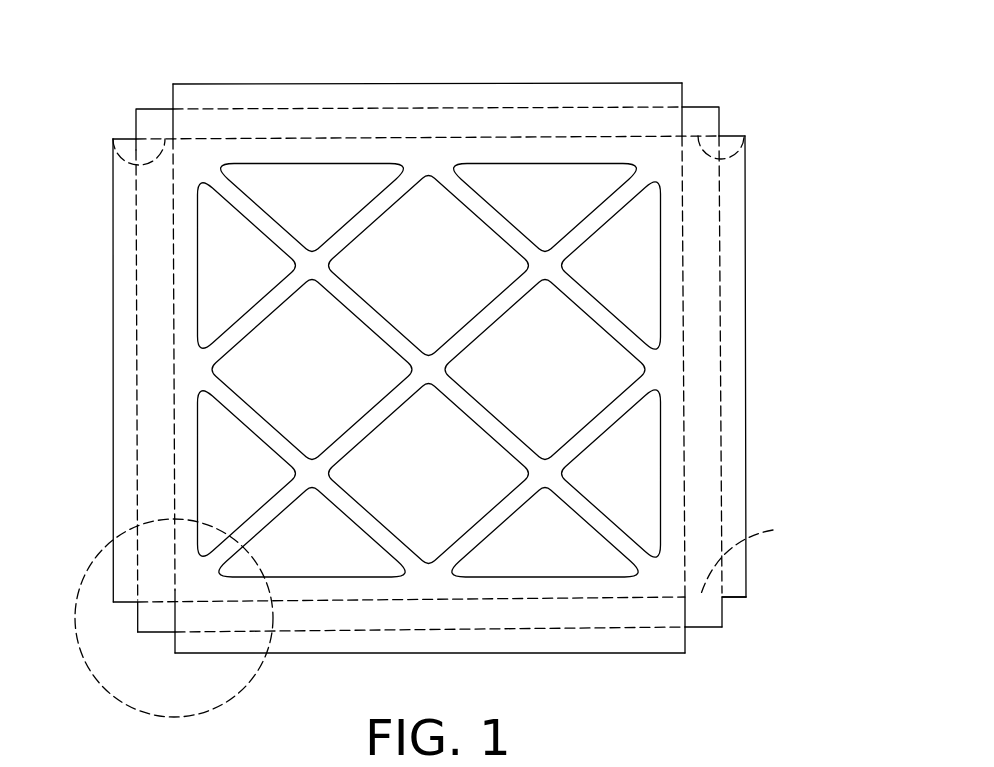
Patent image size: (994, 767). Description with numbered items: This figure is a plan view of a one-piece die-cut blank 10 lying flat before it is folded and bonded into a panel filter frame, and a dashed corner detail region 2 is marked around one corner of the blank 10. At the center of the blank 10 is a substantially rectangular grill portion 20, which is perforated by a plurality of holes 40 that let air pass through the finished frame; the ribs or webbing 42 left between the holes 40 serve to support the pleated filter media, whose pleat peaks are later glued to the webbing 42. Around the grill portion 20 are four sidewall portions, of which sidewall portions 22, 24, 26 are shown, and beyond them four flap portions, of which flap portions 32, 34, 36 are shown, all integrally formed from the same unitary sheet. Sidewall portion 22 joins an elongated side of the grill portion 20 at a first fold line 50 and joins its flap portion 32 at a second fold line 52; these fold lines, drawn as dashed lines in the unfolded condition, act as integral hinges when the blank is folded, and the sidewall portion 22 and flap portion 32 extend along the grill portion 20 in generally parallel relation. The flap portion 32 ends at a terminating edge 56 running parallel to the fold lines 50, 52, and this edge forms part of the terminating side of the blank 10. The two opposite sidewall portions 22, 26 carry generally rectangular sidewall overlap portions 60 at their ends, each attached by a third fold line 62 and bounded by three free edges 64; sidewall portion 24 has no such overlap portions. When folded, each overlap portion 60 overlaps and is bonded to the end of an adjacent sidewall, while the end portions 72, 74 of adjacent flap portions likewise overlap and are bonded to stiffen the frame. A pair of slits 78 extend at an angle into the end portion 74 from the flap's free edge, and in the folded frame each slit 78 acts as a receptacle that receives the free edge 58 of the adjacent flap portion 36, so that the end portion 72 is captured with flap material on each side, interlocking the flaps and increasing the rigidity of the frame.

The corner detail region 2 is at (78, 542).
The die-cut blank 10 is at (766, 95).
The grill portion 20 is at (219, 258).
The sidewall portion 22 is at (157, 337).
The sidewall portion 24 is at (372, 125).
The sidewall portion 26 is at (705, 451).
The flap portion 32 is at (123, 290).
The flap portion 34 is at (249, 97).
The flap portion 36 is at (746, 440).
The holes 40 is at (625, 372).
The ribs or webbing 42 is at (592, 212).
The first fold line 50 is at (173, 410).
The second fold line 52 is at (133, 367).
The terminating edge 56 is at (110, 346).
The free edge 58 is at (752, 483).
The sidewall overlap portion 60 is at (150, 120).
The third fold line 62 is at (110, 147).
The free edges 64 is at (137, 615).
The end portion 72 is at (737, 584).
The end portion 74 is at (668, 633).
The slits 78 is at (196, 97).